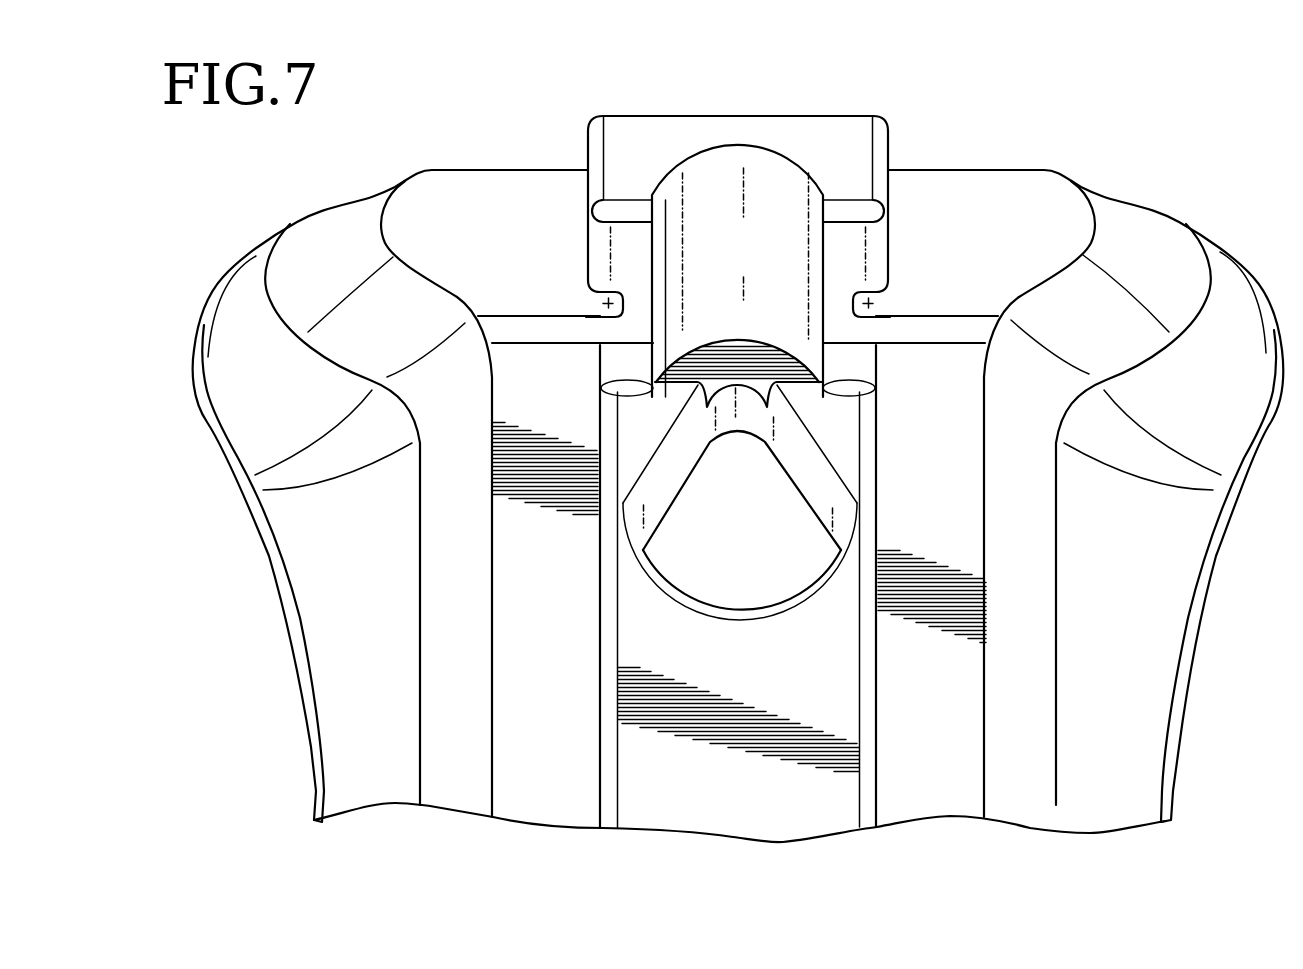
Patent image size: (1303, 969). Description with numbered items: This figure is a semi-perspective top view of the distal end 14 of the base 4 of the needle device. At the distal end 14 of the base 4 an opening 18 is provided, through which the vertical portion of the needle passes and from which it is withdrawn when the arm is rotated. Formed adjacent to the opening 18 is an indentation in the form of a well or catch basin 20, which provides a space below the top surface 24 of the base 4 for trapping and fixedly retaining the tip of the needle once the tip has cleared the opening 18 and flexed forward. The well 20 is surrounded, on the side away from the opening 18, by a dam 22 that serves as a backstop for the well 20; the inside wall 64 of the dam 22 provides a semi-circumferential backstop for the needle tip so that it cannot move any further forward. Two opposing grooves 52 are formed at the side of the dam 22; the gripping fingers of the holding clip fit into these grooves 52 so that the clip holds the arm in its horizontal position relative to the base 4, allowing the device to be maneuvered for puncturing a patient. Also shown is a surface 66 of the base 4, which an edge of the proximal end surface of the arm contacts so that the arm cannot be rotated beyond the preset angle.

The base 4 is at (1138, 598).
The distal end 14 is at (717, 208).
The opening 18 is at (747, 517).
The well 20 is at (743, 355).
The dam 22 is at (625, 150).
The top surface 24 is at (732, 808).
The grooves 52 is at (607, 305).
The inside wall 64 is at (728, 257).
The surface 66 is at (925, 803).